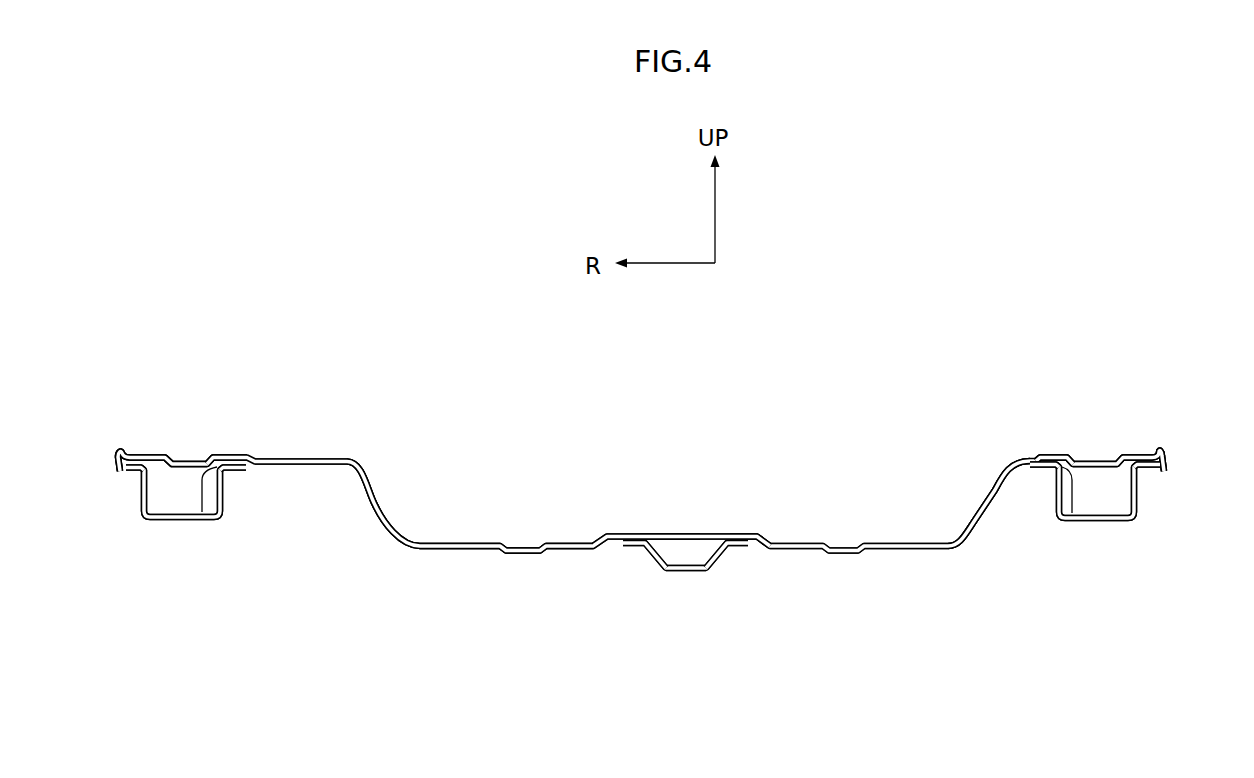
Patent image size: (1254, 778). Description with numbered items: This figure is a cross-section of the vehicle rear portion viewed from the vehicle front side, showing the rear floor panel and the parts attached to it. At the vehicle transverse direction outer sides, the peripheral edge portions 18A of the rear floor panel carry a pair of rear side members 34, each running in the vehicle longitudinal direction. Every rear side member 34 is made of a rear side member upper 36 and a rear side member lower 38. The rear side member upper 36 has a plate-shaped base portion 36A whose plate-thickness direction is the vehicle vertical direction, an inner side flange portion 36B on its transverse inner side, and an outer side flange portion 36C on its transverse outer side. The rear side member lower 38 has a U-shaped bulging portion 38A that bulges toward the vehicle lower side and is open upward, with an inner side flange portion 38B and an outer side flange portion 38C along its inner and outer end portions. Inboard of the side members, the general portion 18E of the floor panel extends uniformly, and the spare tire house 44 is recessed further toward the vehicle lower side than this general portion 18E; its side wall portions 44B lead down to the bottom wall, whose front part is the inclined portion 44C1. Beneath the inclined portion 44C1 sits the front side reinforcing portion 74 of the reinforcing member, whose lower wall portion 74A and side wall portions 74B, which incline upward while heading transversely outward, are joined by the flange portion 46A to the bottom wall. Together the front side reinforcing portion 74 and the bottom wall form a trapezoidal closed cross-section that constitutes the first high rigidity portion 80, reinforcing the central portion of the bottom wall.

The peripheral edge portion 18A is at (202, 520).
The general portion 18E is at (325, 461).
The rear side member 34 is at (652, 457).
The rear side member upper 36 is at (661, 413).
The base portion 36A is at (176, 457).
The inner side flange portion 36B is at (240, 461).
The outer side flange portion 36C is at (109, 455).
The rear side member lower 38 is at (652, 539).
The bulging portion 38A is at (215, 522).
The inner side flange portion 38B is at (238, 472).
The outer side flange portion 38C is at (112, 471).
The spare tire house 44 is at (688, 509).
The side wall portion 44B is at (375, 505).
The inclined portion 44C1 is at (568, 552).
The flange portion 46A is at (740, 546).
The front side reinforcing portion 74 is at (690, 639).
The lower wall portion 74A is at (683, 572).
The side wall portion 74B is at (652, 560).
The first high rigidity portion 80 is at (666, 519).